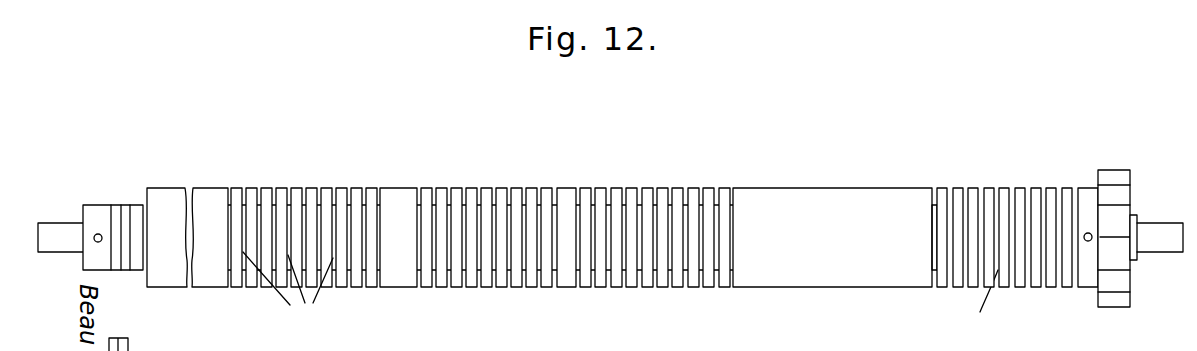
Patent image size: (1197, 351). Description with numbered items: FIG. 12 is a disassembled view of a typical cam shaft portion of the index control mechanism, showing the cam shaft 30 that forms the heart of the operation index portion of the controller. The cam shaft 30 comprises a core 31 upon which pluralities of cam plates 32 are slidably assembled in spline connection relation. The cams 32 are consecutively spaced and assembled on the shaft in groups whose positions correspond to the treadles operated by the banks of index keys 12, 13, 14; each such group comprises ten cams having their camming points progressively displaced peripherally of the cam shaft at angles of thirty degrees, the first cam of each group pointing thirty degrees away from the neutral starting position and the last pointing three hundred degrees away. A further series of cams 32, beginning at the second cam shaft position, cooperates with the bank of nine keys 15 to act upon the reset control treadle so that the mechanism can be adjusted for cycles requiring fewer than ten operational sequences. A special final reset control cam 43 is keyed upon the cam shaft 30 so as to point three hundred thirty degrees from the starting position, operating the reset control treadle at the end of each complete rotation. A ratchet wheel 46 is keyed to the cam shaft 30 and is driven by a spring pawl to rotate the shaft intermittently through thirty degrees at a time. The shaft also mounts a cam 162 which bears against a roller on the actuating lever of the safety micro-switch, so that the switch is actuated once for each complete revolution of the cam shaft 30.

The index key group 12 is at (294, 181).
The index key group 13 is at (468, 190).
The index key group 14 is at (621, 189).
The bank of nine keys 15 is at (988, 189).
The cam shaft 30 is at (843, 297).
The core 31 is at (119, 238).
The cam plates 32 is at (620, 292).
The final reset control cam 43 is at (933, 205).
The ratchet wheel 46 is at (1115, 192).
The cam 162 is at (122, 270).